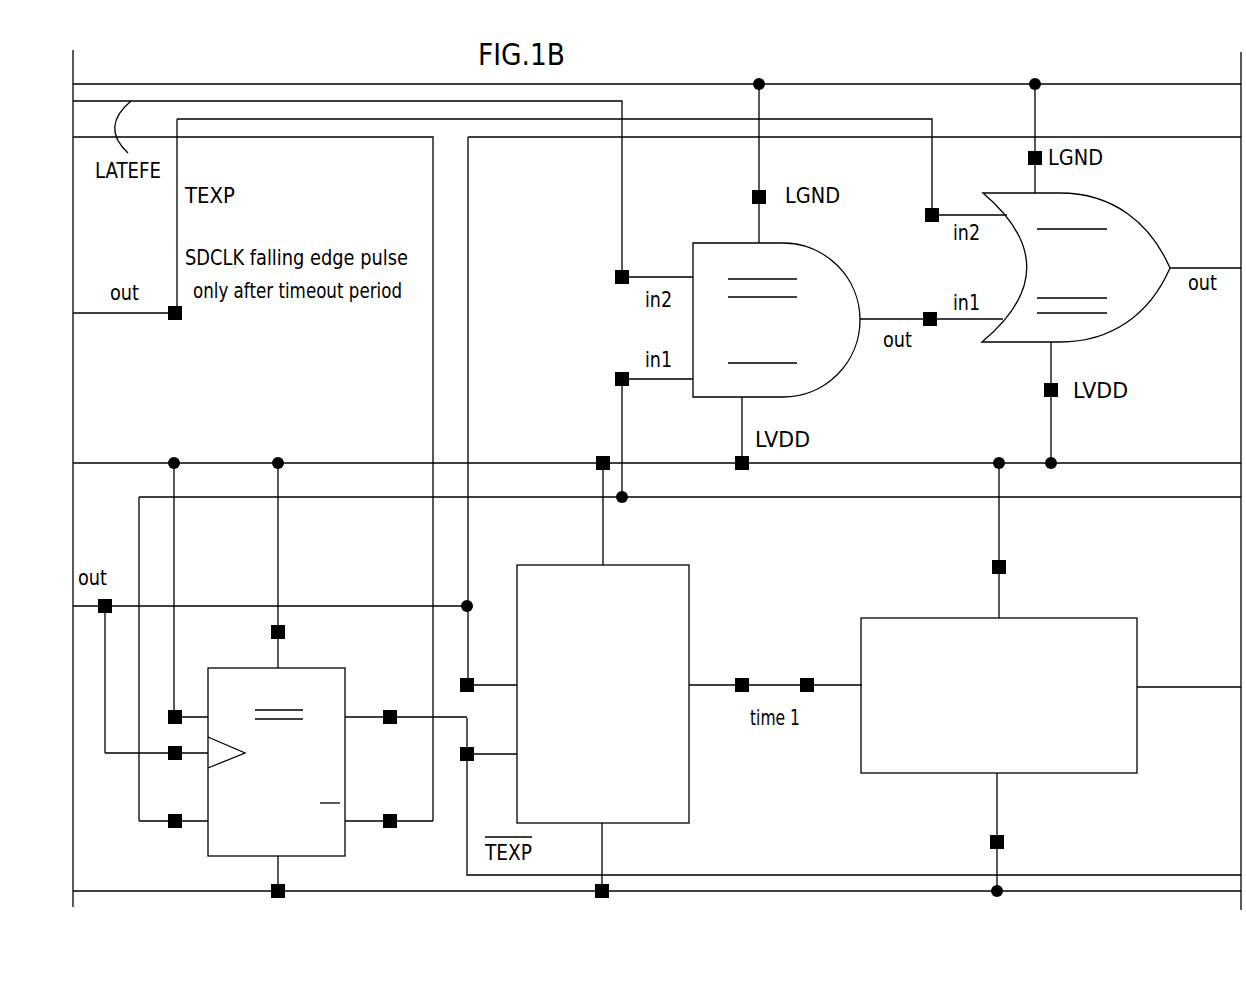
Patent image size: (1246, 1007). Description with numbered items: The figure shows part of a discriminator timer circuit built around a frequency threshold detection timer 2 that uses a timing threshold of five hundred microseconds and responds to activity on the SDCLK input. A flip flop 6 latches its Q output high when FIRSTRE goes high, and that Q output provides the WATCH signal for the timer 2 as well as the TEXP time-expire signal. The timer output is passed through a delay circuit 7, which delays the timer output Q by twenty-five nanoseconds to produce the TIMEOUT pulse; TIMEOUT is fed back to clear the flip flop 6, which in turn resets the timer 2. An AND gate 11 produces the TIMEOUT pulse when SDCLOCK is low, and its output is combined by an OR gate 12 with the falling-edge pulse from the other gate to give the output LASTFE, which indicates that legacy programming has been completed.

The timer 2 is at (713, 628).
The flip flop ffRE 6 is at (210, 837).
The delay circuit DELO 7 is at (862, 758).
The AND gate 11 is at (838, 362).
The OR gate 12 is at (1138, 222).